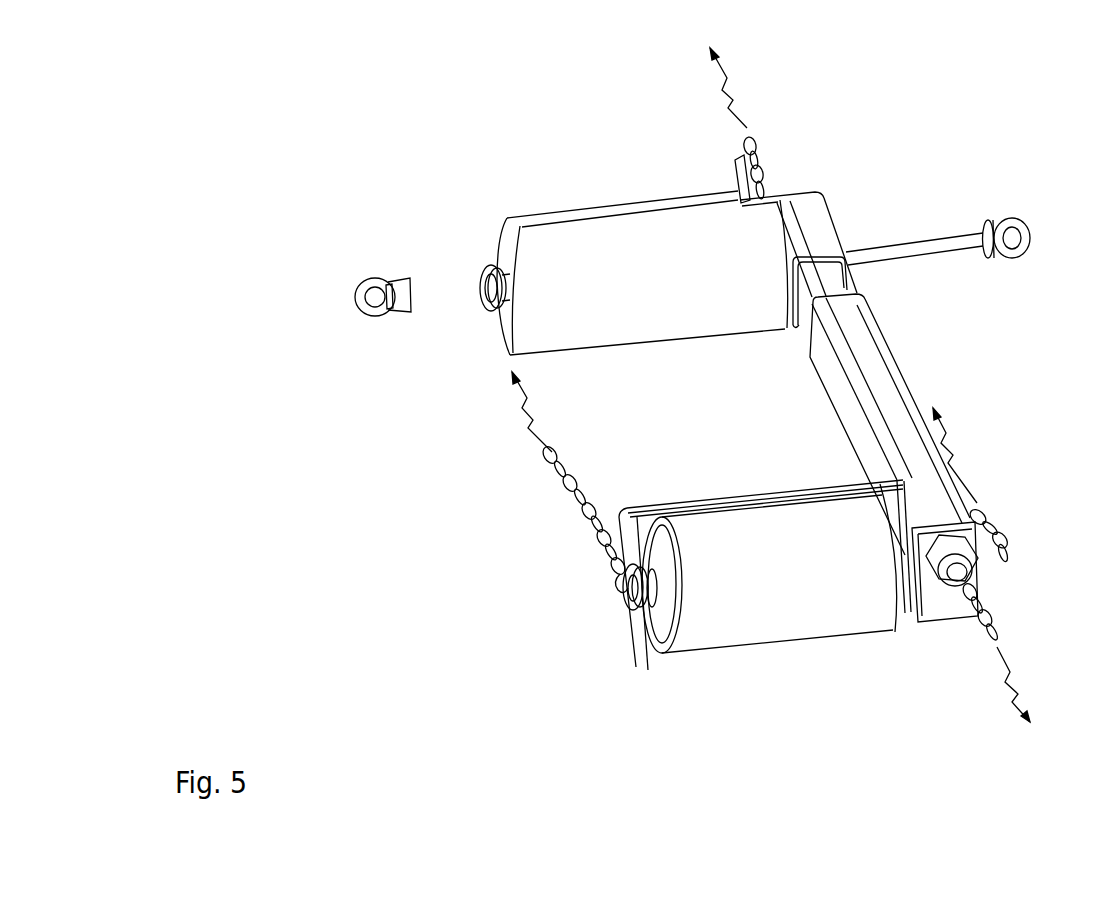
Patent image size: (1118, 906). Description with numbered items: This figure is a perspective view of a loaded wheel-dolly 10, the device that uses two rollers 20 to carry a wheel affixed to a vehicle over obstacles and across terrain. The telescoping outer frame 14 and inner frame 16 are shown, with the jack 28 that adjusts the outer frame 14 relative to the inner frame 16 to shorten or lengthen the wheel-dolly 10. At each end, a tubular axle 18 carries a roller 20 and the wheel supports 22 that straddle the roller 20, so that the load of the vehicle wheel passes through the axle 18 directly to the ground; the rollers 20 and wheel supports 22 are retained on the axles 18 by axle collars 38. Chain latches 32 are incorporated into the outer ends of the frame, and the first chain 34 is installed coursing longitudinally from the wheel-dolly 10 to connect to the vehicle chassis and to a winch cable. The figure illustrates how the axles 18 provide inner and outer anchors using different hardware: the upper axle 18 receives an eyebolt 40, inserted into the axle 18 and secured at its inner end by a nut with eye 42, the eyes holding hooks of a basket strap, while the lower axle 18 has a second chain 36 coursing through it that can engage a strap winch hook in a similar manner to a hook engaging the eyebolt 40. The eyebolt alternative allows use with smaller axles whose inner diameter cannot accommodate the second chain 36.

The wheel-dolly 10 is at (417, 453).
The outer frame 14 is at (895, 360).
The inner frame 16 is at (833, 227).
The axle 18 is at (485, 305).
The roller 20 is at (641, 205).
The wheel support 22 is at (647, 343).
The jack 28 is at (977, 573).
The chain latch 32 is at (737, 187).
The first chain 34 is at (755, 137).
The second chain 36 is at (562, 508).
The axle collar 38 is at (485, 263).
The eyebolt 40 is at (1008, 220).
The nut with eye 42 is at (375, 280).